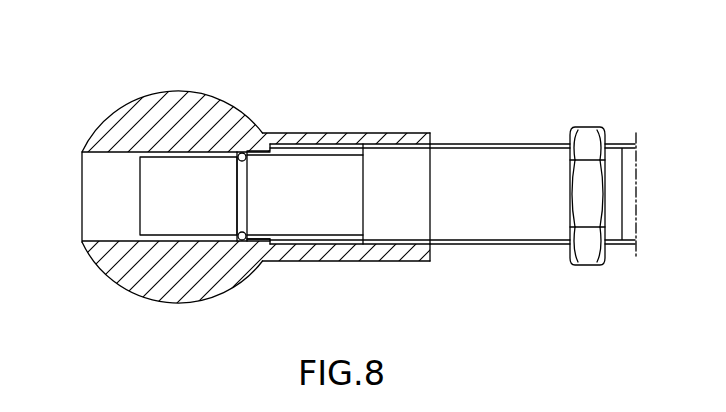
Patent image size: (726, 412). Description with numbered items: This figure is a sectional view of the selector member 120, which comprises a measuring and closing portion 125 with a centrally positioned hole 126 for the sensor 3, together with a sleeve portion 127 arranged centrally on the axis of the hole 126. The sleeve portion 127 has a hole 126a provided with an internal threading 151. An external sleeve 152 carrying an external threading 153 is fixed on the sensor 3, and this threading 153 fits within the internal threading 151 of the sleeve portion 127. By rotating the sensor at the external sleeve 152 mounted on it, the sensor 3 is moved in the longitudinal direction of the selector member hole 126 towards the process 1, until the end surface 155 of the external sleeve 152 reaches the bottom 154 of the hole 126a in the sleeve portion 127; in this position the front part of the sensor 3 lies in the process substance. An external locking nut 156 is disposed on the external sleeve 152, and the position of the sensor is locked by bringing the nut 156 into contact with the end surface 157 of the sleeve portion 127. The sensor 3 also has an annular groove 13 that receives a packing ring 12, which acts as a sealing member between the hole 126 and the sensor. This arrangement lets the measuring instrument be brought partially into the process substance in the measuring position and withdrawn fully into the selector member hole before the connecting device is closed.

The process 1 is at (36, 236).
The sensor 3 is at (176, 215).
The packing ring 12 is at (245, 247).
The annular groove 13 is at (239, 199).
The selector member 120 is at (204, 73).
The measuring and closing portion 125 is at (147, 118).
The hole 126 is at (107, 172).
The hole of sleeve portion 126a is at (312, 141).
The sleeve portion 127 is at (352, 139).
The internal threading 151 is at (358, 245).
The external sleeve 152 is at (468, 218).
The external threading 153 is at (478, 142).
The bottom of hole 154 is at (278, 245).
The end surface of sleeve 155 is at (365, 212).
The locking nut 156 is at (583, 135).
The end surface of sleeve portion 157 is at (431, 141).